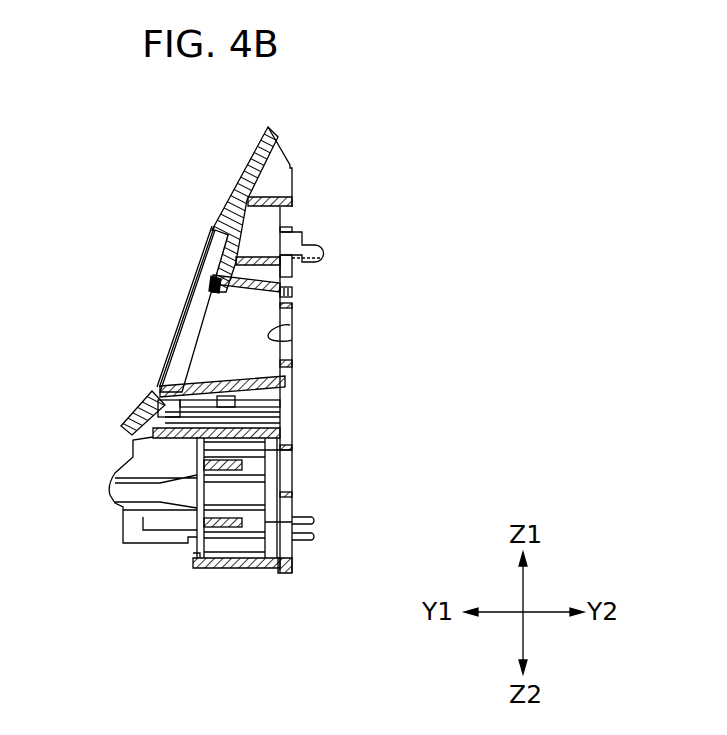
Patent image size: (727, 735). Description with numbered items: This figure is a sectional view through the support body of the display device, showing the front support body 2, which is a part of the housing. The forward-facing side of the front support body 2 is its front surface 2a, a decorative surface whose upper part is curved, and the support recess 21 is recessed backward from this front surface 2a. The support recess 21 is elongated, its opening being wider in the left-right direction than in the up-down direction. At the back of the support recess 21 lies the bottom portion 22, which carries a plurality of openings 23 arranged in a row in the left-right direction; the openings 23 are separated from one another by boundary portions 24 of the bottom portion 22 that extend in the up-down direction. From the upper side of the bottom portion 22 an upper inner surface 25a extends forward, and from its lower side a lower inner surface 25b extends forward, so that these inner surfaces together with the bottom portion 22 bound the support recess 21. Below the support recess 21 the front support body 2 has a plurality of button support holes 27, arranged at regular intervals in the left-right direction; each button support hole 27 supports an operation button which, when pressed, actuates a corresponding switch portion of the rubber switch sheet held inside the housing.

The front support body 2 is at (318, 172).
The front surface 2a is at (234, 189).
The support recess 21 is at (188, 325).
The bottom portion 22 is at (292, 340).
The openings 23 is at (292, 362).
The boundary portions 24 is at (292, 313).
The upper inner surface 25a is at (212, 283).
The lower inner surface 25b is at (215, 378).
The button support holes 27 is at (197, 492).